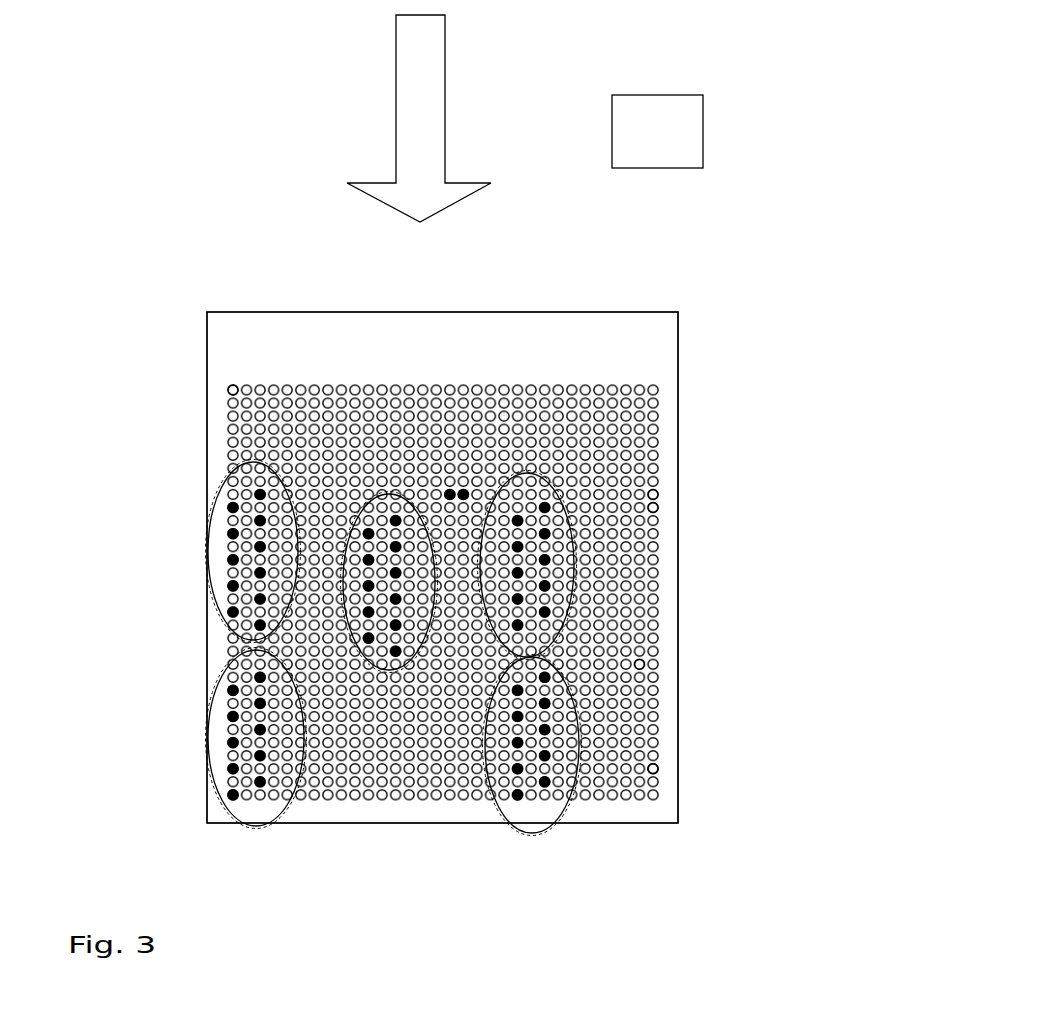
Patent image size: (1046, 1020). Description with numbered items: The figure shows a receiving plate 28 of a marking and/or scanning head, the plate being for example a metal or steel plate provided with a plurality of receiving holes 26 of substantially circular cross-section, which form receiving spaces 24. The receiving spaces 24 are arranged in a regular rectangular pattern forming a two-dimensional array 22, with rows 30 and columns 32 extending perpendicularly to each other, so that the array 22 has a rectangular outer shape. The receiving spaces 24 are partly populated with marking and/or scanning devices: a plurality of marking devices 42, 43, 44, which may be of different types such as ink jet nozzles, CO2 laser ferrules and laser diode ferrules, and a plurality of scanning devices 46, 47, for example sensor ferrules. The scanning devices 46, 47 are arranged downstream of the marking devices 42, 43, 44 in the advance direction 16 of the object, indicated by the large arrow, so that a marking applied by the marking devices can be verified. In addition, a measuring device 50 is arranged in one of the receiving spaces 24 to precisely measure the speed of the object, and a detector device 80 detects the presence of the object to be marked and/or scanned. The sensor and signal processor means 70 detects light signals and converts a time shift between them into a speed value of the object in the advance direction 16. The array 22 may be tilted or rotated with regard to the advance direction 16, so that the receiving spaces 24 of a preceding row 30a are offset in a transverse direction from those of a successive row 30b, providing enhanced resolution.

The advance direction 16 is at (417, 117).
The sensor and signal processor means 70 is at (663, 145).
The receiving plate 28 is at (668, 350).
The two-dimensional array 22 is at (643, 671).
The rows 30 is at (220, 390).
The columns 32 is at (231, 377).
The preceding row 30a is at (664, 491).
The successive row 30b is at (664, 506).
The receiving spaces 24 is at (648, 773).
The receiving holes 26 is at (648, 773).
The marking devices 42 is at (198, 550).
The marking devices 43 is at (374, 484).
The marking devices 44 is at (551, 469).
The scanning devices 46 is at (289, 831).
The scanning devices 47 is at (511, 832).
The measuring device 50 is at (449, 470).
The detector device 80 is at (470, 476).